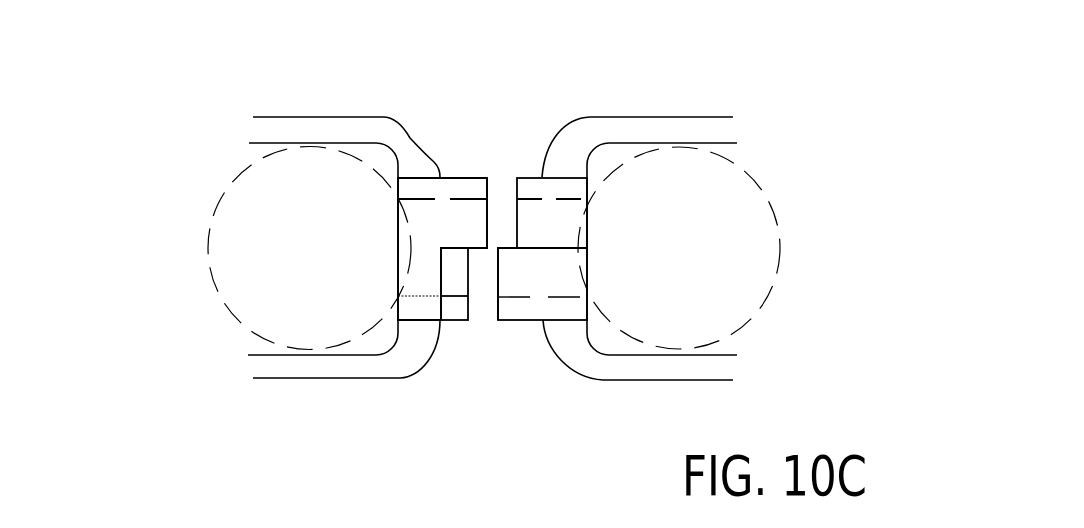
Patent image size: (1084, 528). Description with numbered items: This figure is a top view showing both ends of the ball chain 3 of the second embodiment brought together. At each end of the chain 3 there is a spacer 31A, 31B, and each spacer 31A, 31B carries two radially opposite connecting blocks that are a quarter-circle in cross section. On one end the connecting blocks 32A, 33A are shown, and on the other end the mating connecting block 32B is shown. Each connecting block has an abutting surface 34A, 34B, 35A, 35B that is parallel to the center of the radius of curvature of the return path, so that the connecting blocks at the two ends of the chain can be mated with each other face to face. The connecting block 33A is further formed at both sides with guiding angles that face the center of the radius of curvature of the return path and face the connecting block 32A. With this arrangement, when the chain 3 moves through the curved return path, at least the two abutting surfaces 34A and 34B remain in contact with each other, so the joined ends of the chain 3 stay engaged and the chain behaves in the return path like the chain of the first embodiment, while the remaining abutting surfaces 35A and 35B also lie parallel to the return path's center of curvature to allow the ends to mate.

The chain 3 is at (372, 397).
The spacer 31A is at (413, 177).
The spacer 31B is at (568, 320).
The connecting block 32A is at (457, 177).
The connecting block 32B is at (532, 177).
The connecting block 33A is at (457, 321).
The abutting surface 34A is at (477, 250).
The abutting surface 34B is at (508, 248).
The abutting surface 35A is at (456, 248).
The abutting surface 35B is at (527, 248).